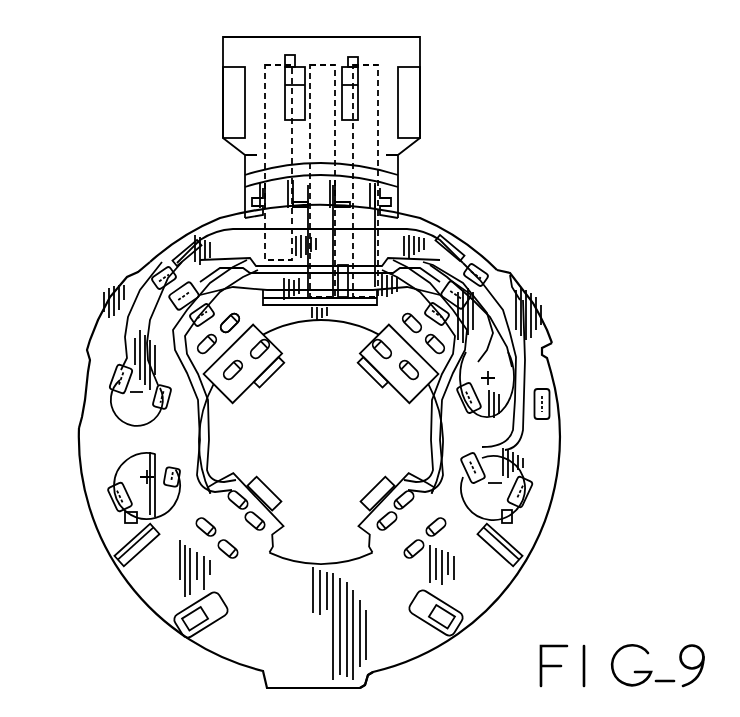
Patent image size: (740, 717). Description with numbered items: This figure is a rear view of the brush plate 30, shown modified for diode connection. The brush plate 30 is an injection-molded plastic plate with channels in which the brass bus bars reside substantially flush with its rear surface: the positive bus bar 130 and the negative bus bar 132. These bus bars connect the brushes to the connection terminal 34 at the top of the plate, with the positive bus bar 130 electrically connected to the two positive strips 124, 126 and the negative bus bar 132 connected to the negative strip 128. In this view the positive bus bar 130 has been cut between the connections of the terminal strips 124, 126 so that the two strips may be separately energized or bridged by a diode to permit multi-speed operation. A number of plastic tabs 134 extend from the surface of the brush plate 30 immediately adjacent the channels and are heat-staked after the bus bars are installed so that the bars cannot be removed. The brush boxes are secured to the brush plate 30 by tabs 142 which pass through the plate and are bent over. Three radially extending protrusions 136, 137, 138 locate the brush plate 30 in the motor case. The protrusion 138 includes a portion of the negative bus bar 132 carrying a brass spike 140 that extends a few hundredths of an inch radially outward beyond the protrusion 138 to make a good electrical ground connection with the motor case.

The brush plate 30 is at (552, 503).
The connection terminal 34 is at (222, 52).
The positive strip 124 is at (367, 63).
The positive strip 126 is at (323, 62).
The negative strip 128 is at (272, 63).
The positive bus bar 130 is at (470, 327).
The negative bus bar 132 is at (515, 460).
The plastic tabs 134 is at (110, 380).
The protrusion 136 is at (362, 690).
The protrusion 137 is at (130, 272).
The protrusion 138 is at (553, 322).
The brass spike 140 is at (537, 305).
The tabs 142 is at (234, 328).